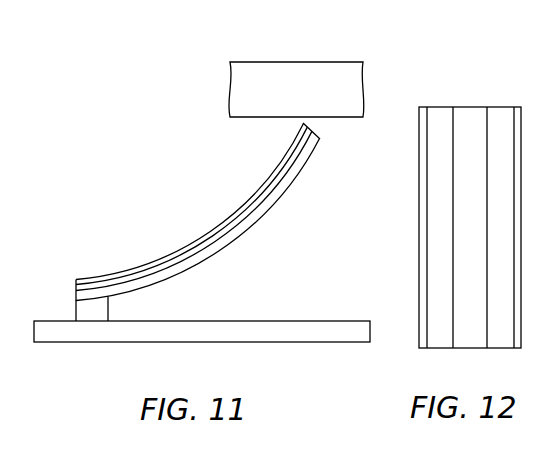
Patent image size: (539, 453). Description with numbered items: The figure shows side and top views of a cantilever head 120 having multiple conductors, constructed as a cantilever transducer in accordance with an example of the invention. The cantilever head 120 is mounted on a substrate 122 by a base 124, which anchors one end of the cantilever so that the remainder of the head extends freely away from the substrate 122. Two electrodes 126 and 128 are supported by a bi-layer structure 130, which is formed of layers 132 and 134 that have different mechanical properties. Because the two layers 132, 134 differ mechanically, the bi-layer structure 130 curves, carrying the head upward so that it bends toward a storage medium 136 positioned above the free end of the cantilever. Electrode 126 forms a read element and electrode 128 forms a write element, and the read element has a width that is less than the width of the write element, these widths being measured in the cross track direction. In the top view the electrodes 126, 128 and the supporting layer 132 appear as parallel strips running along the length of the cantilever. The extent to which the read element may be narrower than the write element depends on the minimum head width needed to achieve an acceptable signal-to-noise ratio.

In FIG. 11, the cantilever head 120 is at (179, 206).
In FIG. 11, the substrate 122 is at (292, 332).
In FIG. 11, the base 124 is at (78, 310).
In FIG. 12, the electrode 126 is at (438, 115).
In FIG. 11, the electrode 128 is at (142, 271).
In FIG. 12, the electrode 128 is at (500, 115).
In FIG. 11, the bi-layer structure 130 is at (281, 187).
In FIG. 11, the layer 132 is at (243, 217).
In FIG. 12, the layer 132 is at (470, 115).
In FIG. 11, the layer 134 is at (210, 257).
In FIG. 11, the storage medium 136 is at (287, 72).